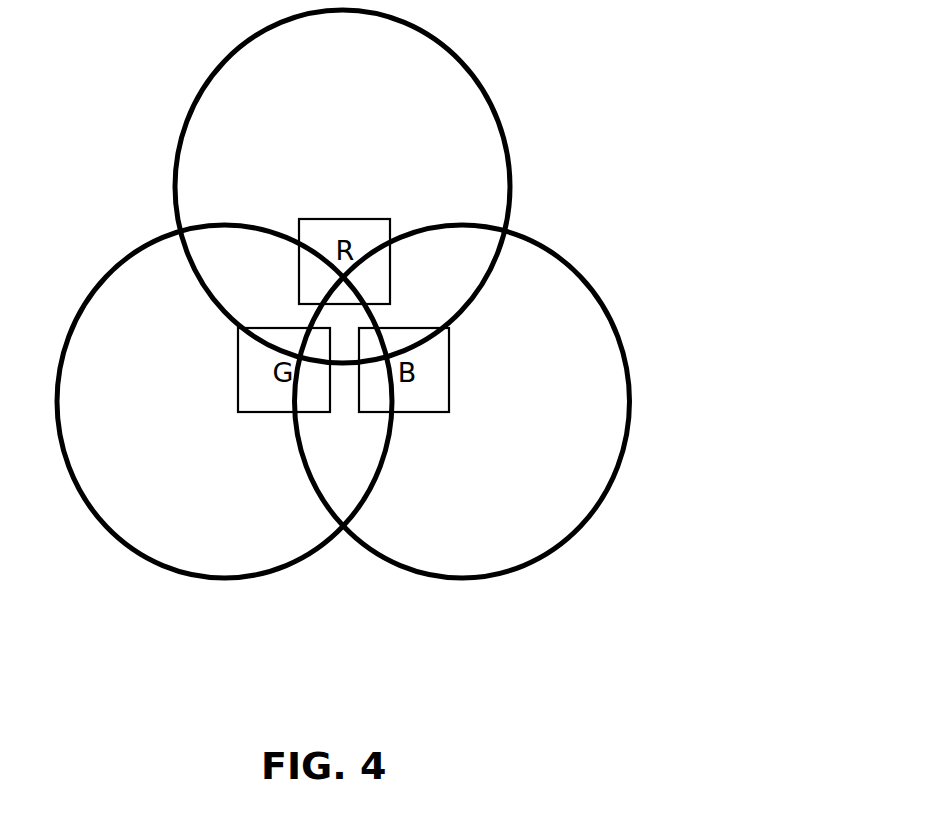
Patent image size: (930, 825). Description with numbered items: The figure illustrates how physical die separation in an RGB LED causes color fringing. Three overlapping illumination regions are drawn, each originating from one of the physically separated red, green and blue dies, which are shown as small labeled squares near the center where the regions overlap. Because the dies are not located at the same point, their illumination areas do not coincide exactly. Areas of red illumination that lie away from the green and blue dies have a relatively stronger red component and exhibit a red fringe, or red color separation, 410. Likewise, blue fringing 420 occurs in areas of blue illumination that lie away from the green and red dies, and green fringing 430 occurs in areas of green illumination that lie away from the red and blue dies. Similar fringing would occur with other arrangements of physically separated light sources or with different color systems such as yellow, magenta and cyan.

The red fringe 410 is at (443, 92).
The blue fringing 420 is at (553, 488).
The green fringing 430 is at (118, 445).